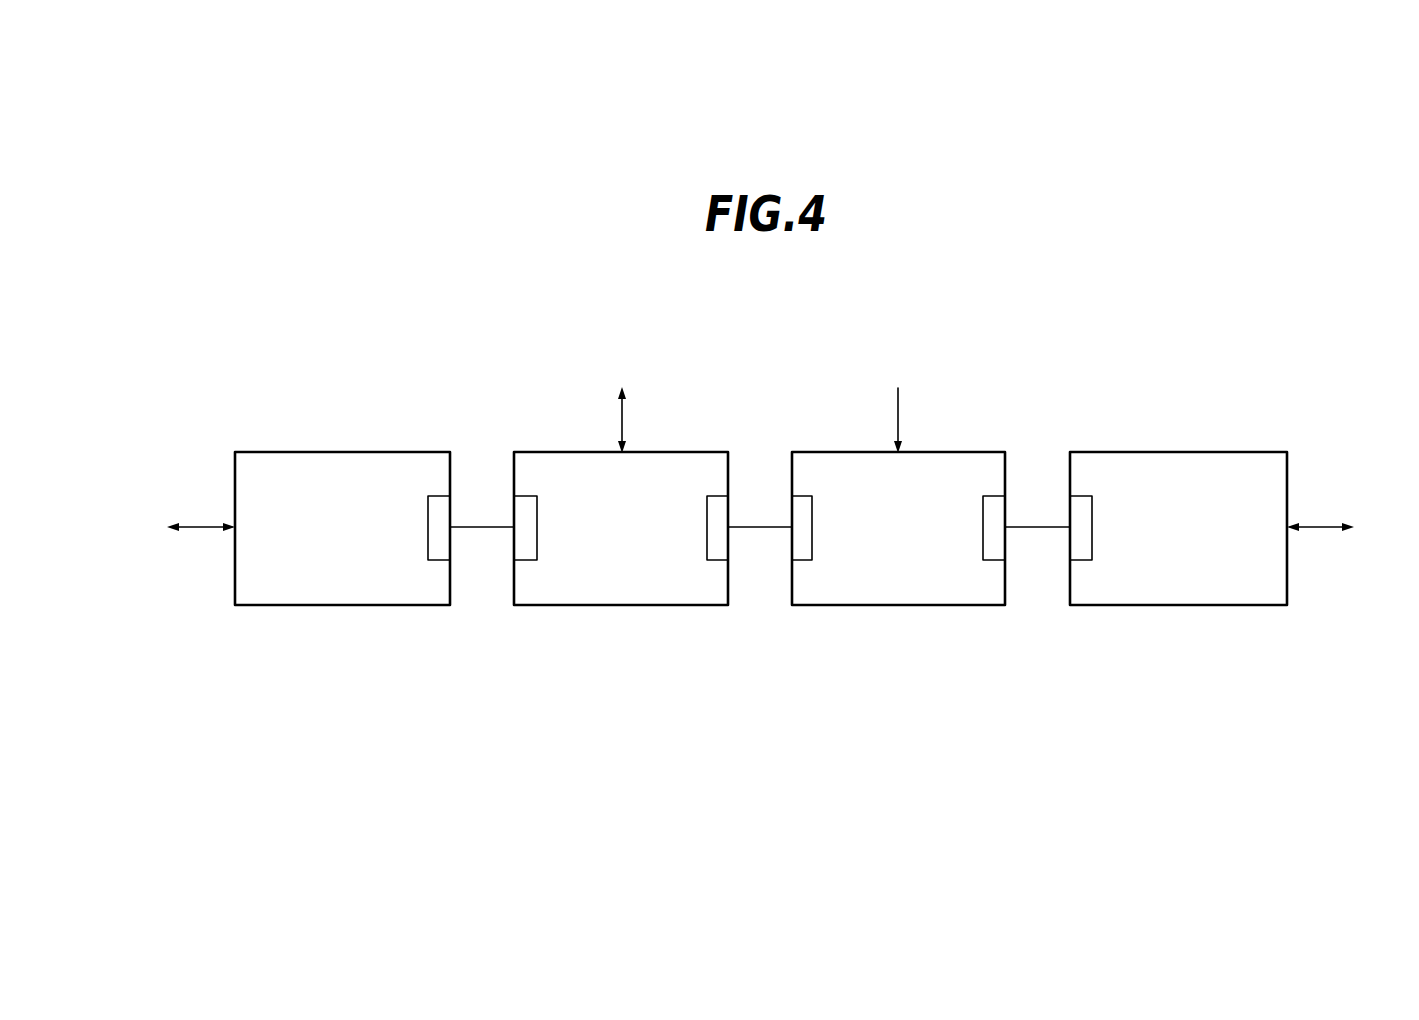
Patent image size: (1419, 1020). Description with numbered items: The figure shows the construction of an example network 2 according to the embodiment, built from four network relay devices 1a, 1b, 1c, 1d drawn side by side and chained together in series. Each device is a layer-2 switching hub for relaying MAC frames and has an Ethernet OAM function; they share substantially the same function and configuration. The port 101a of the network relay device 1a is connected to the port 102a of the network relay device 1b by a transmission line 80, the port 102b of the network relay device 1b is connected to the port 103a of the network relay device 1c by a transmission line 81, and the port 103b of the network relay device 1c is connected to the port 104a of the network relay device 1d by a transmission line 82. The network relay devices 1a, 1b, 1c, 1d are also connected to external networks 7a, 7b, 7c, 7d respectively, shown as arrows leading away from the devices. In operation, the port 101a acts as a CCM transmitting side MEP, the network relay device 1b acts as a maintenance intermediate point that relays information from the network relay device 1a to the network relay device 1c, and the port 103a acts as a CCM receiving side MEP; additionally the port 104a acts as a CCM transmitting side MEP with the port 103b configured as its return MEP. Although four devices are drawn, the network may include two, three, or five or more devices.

The network 2 is at (1172, 356).
The network relay device 1a is at (220, 442).
The network relay device 1b is at (502, 442).
The network relay device 1c is at (777, 442).
The network relay device 1d is at (1057, 442).
The external network 7a is at (183, 526).
The external network 7b is at (621, 407).
The external network 7c is at (899, 407).
The external network 7d is at (1336, 528).
The transmission line 80 is at (483, 532).
The transmission line 81 is at (760, 532).
The transmission line 82 is at (1037, 532).
The port 101a is at (440, 563).
The port 102a is at (528, 563).
The port 102b is at (715, 563).
The port 103a is at (805, 563).
The port 103b is at (993, 563).
The port 104a is at (1082, 563).